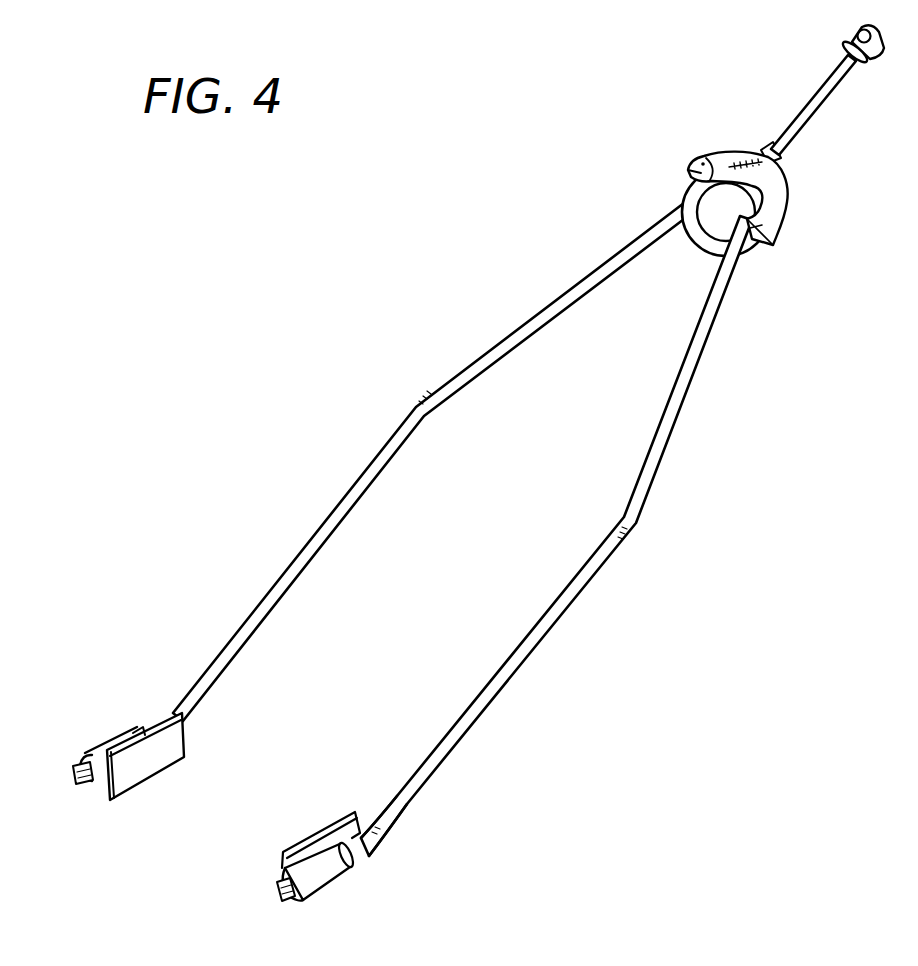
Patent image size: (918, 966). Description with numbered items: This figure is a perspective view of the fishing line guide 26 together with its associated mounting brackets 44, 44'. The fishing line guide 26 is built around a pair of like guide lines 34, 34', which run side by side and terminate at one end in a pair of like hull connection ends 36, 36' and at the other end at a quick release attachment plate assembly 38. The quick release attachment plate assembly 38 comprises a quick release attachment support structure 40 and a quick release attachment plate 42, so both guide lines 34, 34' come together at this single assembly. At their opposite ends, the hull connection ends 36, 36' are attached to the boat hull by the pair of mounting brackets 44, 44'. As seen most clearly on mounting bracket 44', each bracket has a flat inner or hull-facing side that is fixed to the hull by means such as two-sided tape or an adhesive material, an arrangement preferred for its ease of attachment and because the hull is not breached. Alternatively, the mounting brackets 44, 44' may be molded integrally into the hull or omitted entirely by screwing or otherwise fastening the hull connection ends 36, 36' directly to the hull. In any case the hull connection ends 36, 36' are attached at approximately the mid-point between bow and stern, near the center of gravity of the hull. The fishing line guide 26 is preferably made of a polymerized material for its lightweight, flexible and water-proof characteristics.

The fishing line guide 26 is at (345, 445).
The guide line 34 is at (556, 536).
The guide line 34' is at (432, 462).
The hull connection end 36 is at (401, 844).
The hull connection end 36' is at (113, 712).
The quick release attachment plate assembly 38 is at (693, 183).
The quick release attachment support structure 40 is at (720, 152).
The quick release attachment plate 42 is at (846, 38).
The mounting bracket 44 is at (339, 876).
The mounting bracket 44' is at (96, 756).